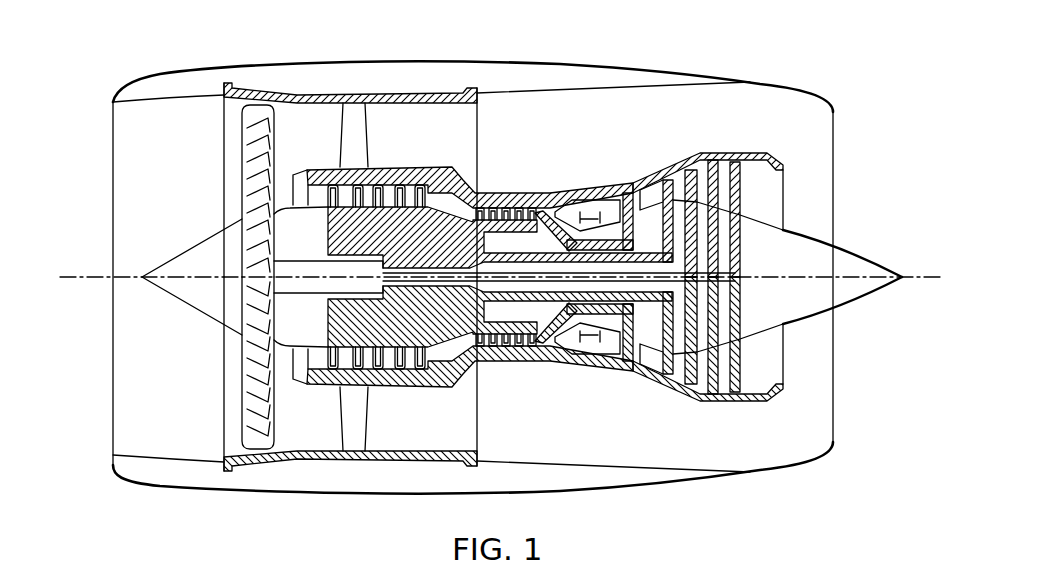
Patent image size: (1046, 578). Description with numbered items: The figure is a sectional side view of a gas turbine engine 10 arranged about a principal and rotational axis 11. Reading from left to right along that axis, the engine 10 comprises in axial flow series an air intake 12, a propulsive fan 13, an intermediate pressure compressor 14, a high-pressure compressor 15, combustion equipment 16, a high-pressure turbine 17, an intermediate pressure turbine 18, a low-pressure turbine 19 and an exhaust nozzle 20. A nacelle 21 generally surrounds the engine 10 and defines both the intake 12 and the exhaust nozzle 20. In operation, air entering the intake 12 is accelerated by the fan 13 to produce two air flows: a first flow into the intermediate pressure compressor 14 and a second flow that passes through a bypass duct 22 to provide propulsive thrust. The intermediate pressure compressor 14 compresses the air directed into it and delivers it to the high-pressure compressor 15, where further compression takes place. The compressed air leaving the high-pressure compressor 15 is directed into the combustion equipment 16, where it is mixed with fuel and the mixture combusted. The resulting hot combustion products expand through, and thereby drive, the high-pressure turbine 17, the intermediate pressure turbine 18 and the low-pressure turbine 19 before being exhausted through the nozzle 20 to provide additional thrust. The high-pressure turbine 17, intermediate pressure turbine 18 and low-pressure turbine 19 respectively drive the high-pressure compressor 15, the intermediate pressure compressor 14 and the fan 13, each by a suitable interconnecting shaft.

The gas turbine engine 10 is at (107, 144).
The principal and rotational axis 11 is at (102, 275).
The air intake 12 is at (165, 98).
The propulsive fan 13 is at (243, 398).
The intermediate pressure compressor 14 is at (383, 367).
The high-pressure compressor 15 is at (488, 208).
The combustion equipment 16 is at (582, 343).
The high-pressure turbine 17 is at (602, 365).
The intermediate pressure turbine 18 is at (650, 186).
The low-pressure turbine 19 is at (683, 378).
The exhaust nozzle 20 is at (838, 418).
The nacelle 21 is at (670, 70).
The bypass duct 22 is at (423, 146).